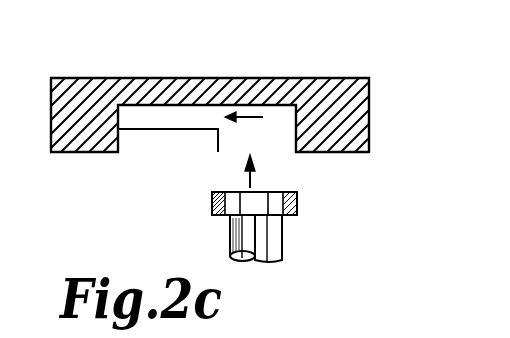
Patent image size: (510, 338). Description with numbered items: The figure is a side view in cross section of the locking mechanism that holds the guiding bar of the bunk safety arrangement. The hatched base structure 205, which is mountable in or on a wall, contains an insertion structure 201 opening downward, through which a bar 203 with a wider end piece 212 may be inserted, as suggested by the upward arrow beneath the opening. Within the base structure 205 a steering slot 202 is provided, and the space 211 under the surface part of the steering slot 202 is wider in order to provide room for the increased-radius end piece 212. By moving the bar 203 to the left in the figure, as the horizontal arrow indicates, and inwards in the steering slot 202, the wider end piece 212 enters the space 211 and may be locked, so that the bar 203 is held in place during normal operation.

The insertion structure 201 is at (278, 140).
The steering slot 202 is at (127, 156).
The guiding bar 203 is at (263, 238).
The base structure 205 is at (320, 97).
The space under the surface part of steering slot 211 is at (139, 110).
The end piece 212 is at (212, 198).